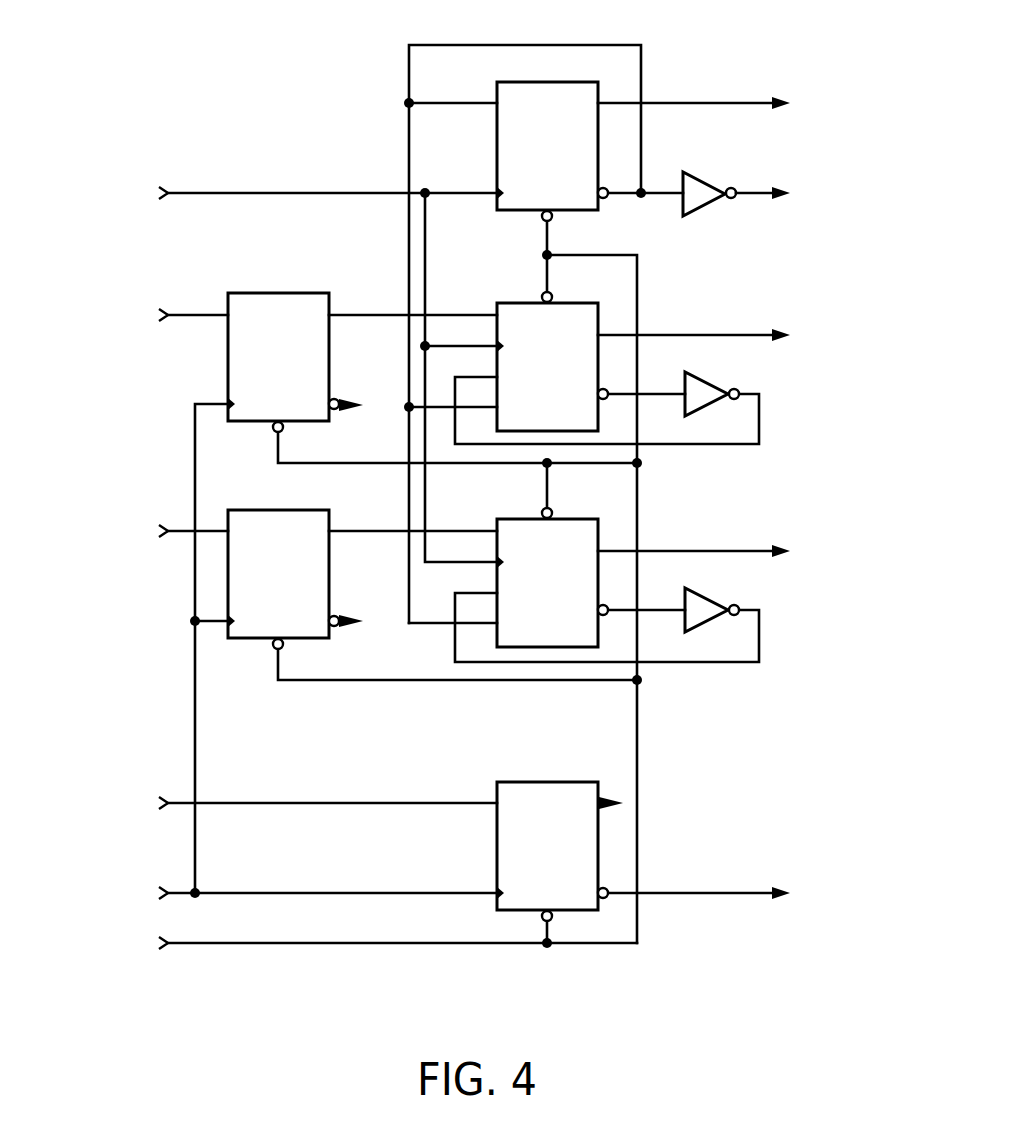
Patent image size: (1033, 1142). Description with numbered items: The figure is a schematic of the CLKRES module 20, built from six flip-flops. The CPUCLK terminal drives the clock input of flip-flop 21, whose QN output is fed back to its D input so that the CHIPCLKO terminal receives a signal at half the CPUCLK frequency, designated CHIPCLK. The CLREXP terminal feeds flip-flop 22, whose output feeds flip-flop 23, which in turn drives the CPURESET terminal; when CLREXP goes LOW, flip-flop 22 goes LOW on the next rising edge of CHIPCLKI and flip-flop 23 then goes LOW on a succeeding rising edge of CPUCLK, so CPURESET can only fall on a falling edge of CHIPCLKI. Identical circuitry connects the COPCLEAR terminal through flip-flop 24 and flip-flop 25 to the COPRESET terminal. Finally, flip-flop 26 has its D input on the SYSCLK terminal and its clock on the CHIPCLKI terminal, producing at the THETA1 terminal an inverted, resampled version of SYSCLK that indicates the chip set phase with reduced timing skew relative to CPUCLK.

The CLKRES module 20 is at (296, 84).
The flip-flop 21 is at (535, 82).
The flip-flop 22 is at (300, 293).
The flip-flop 23 is at (518, 303).
The flip-flop 24 is at (300, 510).
The flip-flop 25 is at (518, 519).
The flip-flop 26 is at (518, 782).